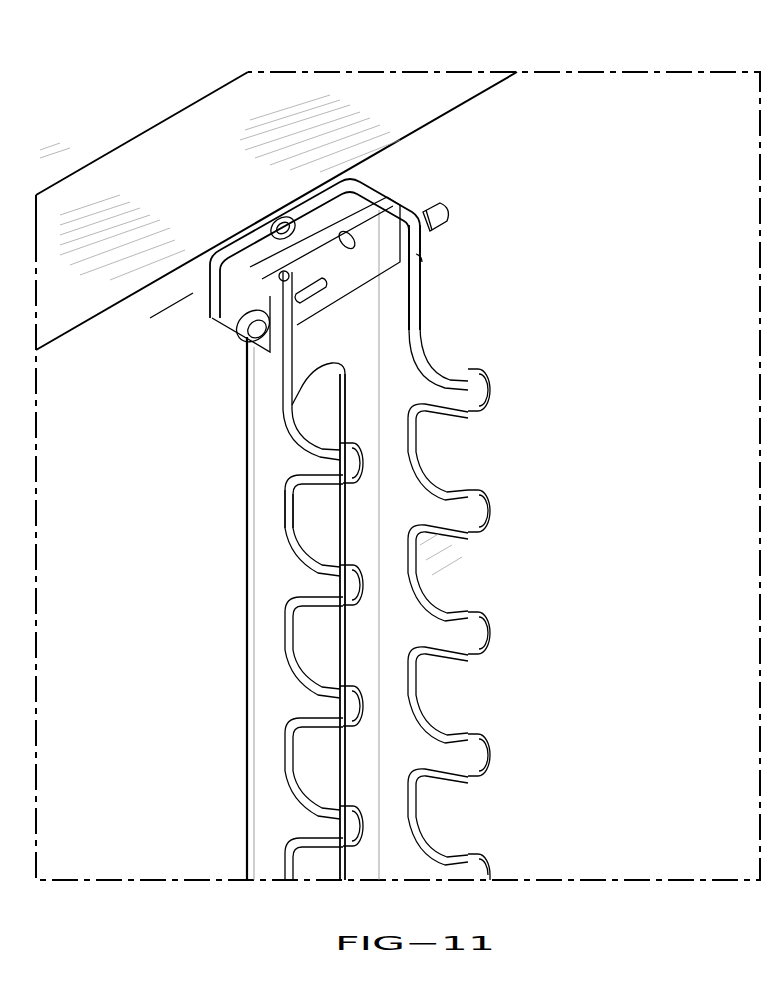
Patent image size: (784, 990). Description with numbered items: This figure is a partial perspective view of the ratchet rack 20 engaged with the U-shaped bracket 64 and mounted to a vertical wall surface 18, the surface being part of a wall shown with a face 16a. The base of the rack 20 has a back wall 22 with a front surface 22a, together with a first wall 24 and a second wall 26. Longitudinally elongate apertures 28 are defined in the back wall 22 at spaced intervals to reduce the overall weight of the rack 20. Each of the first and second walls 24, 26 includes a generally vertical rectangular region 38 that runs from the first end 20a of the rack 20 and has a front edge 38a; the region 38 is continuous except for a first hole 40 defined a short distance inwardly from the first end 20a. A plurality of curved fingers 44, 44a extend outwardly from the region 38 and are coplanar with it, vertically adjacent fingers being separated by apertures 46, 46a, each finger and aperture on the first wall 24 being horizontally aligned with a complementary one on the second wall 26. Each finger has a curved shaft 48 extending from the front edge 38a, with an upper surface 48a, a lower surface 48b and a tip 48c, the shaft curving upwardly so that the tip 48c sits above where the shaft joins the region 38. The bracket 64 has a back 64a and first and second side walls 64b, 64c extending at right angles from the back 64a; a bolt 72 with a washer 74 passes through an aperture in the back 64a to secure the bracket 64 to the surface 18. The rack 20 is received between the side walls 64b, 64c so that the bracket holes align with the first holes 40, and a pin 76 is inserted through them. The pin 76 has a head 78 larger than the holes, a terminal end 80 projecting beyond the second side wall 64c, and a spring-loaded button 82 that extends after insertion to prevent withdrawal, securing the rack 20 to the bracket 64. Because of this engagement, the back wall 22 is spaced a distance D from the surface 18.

The surface 18 is at (627, 118).
The wall surface 16a is at (148, 118).
The rack 20 is at (237, 436).
The first end 20a is at (400, 190).
The back wall 22 is at (311, 222).
The front surface 22a is at (316, 226).
The first wall 24 is at (278, 472).
The second wall 26 is at (425, 314).
The apertures 28 is at (318, 387).
The vertical rectangular region 38 is at (263, 372).
The front edge 38a is at (420, 272).
The first hole 40 is at (392, 178).
The curved fingers 44 is at (318, 613).
The curved finger 44a is at (320, 486).
The aperture 46 is at (288, 567).
The aperture 46a is at (290, 448).
The curved shaft 48 is at (470, 556).
The upper surface 48a is at (447, 502).
The lower surface 48b is at (446, 538).
The tip 48c is at (472, 498).
The U-shaped bracket 64 is at (378, 168).
The back 64a is at (243, 253).
The first side wall 64b is at (228, 305).
The second side wall 64c is at (438, 203).
The bolt 72 is at (280, 228).
The washer 74 is at (287, 240).
The pin 76 is at (348, 290).
The head 78 is at (243, 330).
The terminal end 80 is at (452, 210).
The spring-loaded button 82 is at (433, 230).
The distance D is at (92, 275).